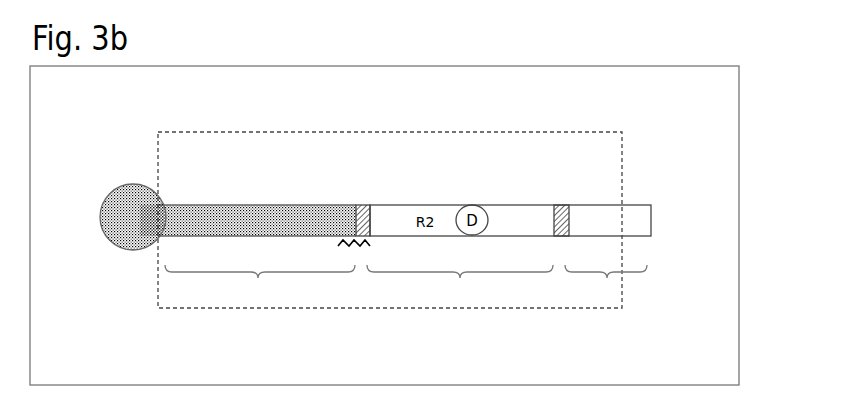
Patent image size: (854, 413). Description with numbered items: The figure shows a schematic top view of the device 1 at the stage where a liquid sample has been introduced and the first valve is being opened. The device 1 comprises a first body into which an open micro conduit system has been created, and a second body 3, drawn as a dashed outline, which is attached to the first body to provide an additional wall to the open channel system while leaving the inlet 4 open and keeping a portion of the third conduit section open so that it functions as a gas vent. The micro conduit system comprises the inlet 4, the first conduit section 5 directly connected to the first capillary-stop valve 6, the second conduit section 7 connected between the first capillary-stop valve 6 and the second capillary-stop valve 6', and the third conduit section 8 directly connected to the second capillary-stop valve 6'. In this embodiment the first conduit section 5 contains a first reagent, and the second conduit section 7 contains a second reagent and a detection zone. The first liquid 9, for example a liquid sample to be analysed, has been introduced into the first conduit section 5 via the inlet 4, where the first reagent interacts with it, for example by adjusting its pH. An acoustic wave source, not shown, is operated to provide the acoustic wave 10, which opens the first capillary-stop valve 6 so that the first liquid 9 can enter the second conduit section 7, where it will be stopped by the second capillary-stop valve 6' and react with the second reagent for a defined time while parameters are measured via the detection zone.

The device 1 is at (372, 225).
The second body 3 is at (369, 125).
The inlet 4 is at (132, 182).
The first conduit section 5 is at (260, 289).
The first capillary-stop valve 6 is at (338, 193).
The second capillary-stop valve 6' is at (538, 193).
The second conduit section 7 is at (460, 289).
The third conduit section 8 is at (606, 289).
The first liquid 9 is at (228, 213).
The acoustic wave 10 is at (358, 257).